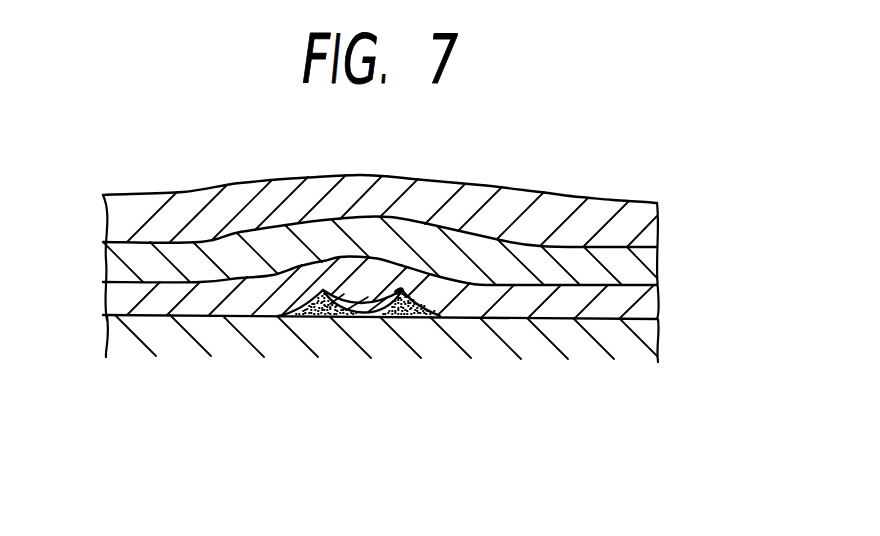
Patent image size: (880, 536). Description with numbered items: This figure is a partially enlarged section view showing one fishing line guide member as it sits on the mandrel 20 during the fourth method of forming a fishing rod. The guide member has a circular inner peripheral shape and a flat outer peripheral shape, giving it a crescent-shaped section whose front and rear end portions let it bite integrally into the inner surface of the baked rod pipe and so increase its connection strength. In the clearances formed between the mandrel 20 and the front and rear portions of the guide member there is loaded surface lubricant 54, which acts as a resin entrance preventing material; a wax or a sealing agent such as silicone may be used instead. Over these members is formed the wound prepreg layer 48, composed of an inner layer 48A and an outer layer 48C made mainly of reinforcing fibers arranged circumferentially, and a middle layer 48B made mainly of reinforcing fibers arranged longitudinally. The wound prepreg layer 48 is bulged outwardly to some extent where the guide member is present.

The mandrel 20 is at (388, 415).
The wound prepreg layer 48 is at (452, 247).
The inner layer 48A is at (437, 287).
The middle layer 48B is at (636, 270).
The outer layer 48C is at (637, 224).
The loaded surface lubricant 54 is at (313, 318).